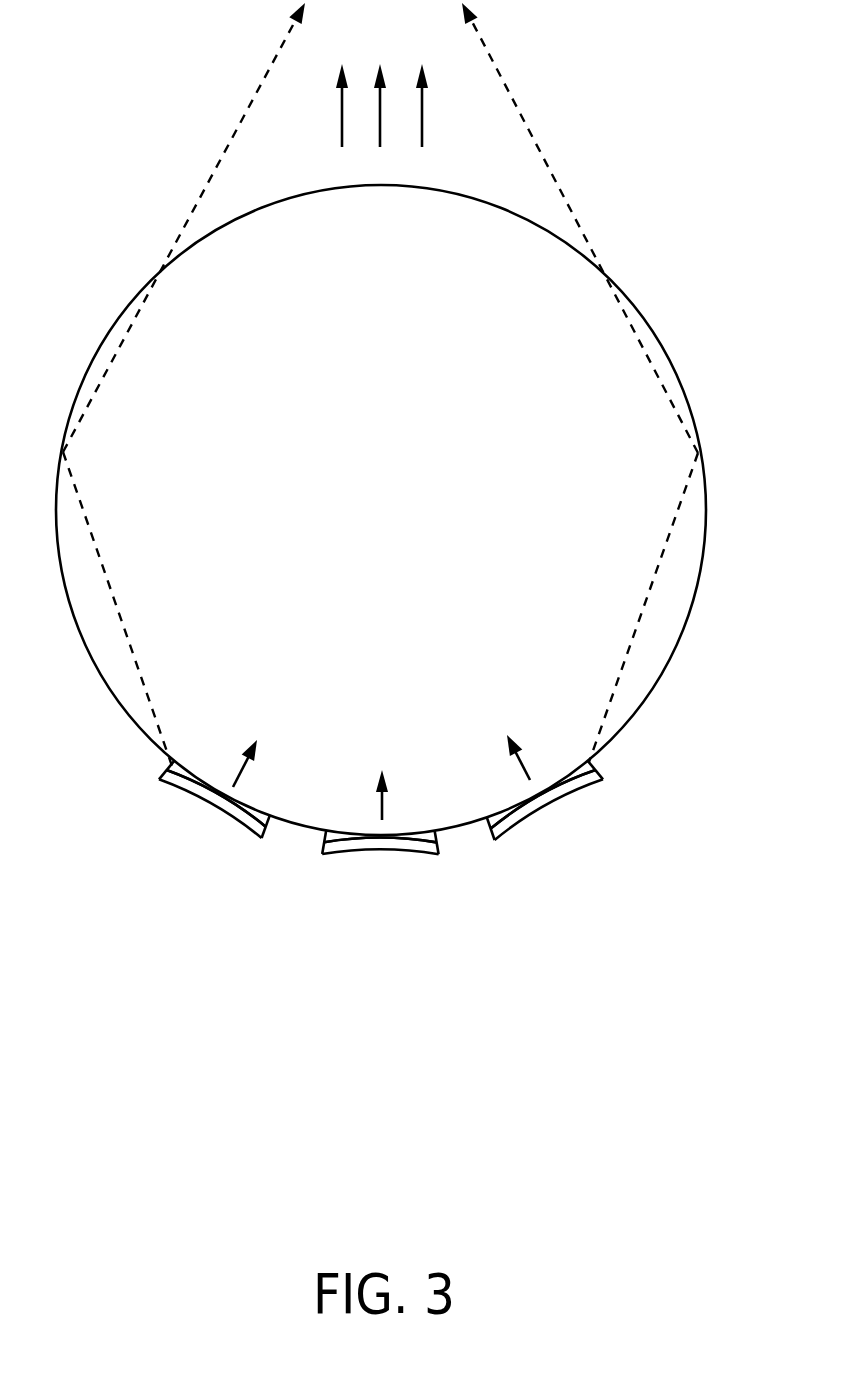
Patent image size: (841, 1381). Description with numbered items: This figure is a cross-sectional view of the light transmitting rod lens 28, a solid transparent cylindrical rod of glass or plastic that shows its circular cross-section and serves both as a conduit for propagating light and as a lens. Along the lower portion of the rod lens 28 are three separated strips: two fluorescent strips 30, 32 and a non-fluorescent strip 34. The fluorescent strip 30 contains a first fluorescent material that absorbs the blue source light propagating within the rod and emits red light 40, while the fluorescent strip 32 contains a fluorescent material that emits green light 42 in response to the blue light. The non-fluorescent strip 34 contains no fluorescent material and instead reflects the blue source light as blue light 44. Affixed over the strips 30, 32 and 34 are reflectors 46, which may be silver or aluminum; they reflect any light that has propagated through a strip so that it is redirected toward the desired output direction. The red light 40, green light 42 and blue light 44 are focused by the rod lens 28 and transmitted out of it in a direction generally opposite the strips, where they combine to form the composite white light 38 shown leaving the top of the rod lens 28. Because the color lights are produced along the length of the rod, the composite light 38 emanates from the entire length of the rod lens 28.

The light transmitting rod lens 28 is at (697, 595).
The fluorescent strip 30 is at (588, 768).
The fluorescent strip 32 is at (328, 836).
The non-fluorescent strip 34 is at (172, 768).
The composite white light 38 is at (422, 125).
The red light 40 is at (530, 768).
The green light 42 is at (385, 807).
The blue light 44 is at (237, 770).
The reflectors 46 is at (252, 828).